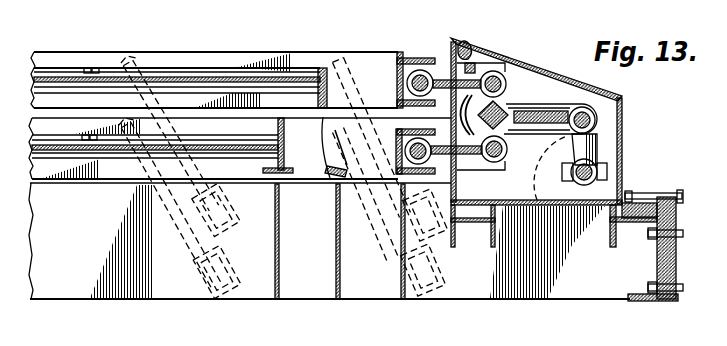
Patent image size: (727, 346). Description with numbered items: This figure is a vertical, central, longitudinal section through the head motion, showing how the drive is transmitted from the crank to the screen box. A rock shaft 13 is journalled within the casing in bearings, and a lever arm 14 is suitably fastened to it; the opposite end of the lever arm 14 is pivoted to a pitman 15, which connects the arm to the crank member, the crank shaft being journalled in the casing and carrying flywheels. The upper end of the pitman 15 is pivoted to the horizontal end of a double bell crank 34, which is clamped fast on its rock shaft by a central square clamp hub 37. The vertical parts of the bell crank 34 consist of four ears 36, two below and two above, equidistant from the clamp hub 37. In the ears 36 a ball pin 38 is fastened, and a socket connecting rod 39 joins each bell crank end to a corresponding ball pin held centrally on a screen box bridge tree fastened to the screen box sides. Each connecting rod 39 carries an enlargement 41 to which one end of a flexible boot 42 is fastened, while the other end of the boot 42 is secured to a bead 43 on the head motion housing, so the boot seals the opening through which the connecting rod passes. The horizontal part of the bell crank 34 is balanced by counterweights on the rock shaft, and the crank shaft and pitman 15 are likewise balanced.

The rock shaft 13 is at (512, 106).
The lever arm 14 is at (495, 20).
The pitman 15 is at (600, 130).
The double bell crank 34 is at (528, 66).
The ears 36 is at (473, 60).
The central square clamp hub 37 is at (500, 138).
The ball pin 38 is at (397, 93).
The socket connecting rod 39 is at (417, 60).
The enlargement 41 is at (478, 100).
The flexible boot 42 is at (448, 66).
The bead 43 is at (460, 44).